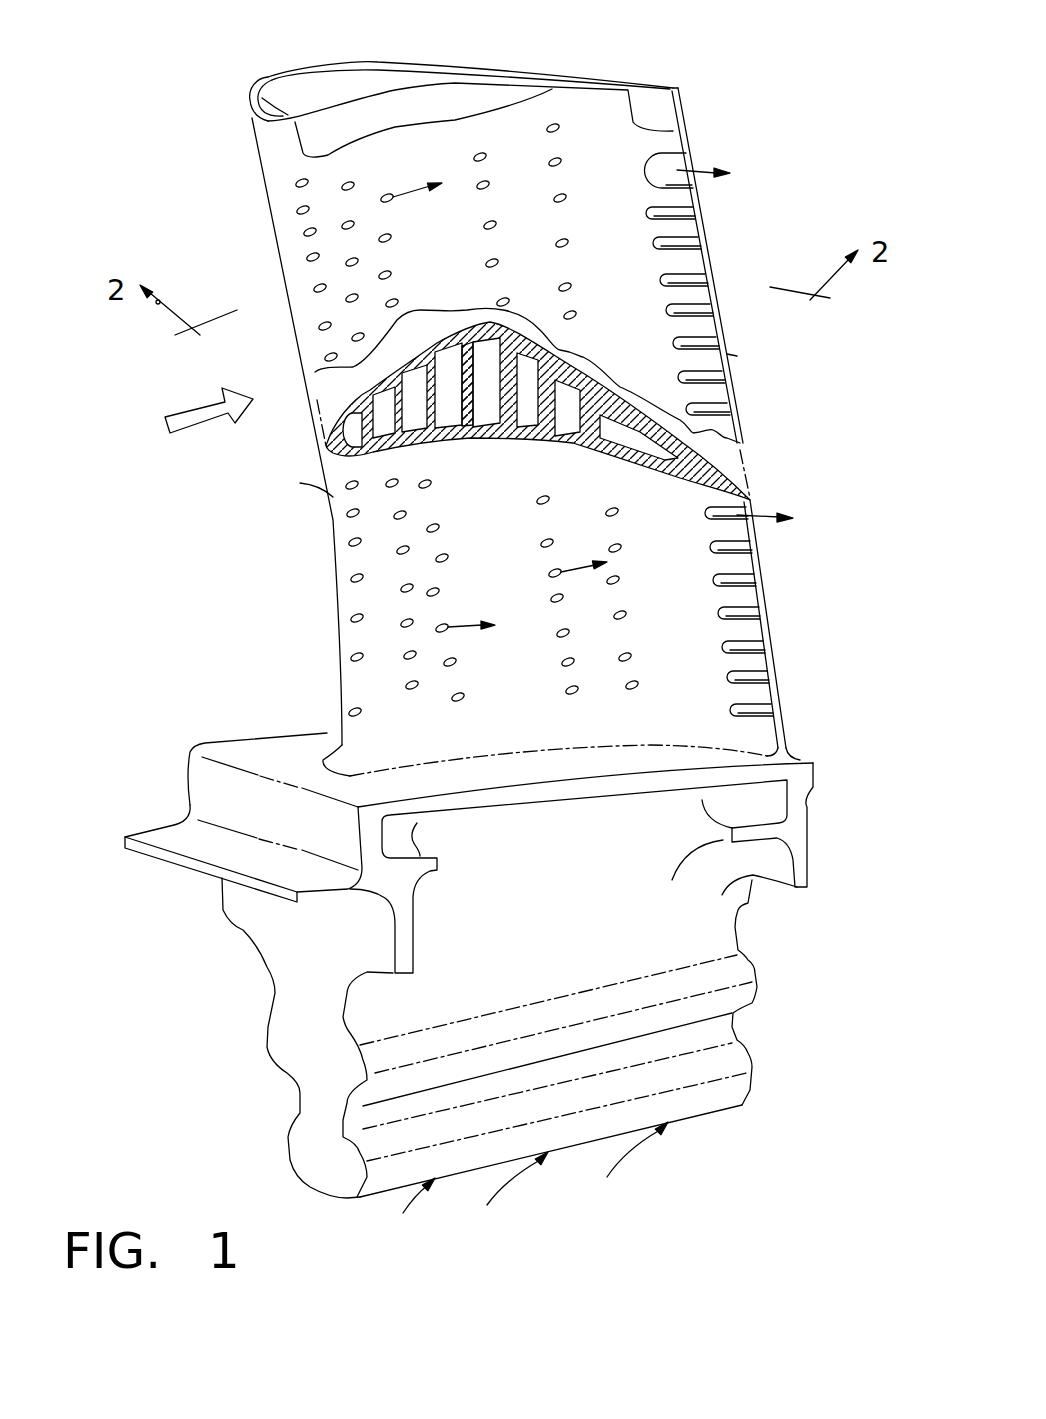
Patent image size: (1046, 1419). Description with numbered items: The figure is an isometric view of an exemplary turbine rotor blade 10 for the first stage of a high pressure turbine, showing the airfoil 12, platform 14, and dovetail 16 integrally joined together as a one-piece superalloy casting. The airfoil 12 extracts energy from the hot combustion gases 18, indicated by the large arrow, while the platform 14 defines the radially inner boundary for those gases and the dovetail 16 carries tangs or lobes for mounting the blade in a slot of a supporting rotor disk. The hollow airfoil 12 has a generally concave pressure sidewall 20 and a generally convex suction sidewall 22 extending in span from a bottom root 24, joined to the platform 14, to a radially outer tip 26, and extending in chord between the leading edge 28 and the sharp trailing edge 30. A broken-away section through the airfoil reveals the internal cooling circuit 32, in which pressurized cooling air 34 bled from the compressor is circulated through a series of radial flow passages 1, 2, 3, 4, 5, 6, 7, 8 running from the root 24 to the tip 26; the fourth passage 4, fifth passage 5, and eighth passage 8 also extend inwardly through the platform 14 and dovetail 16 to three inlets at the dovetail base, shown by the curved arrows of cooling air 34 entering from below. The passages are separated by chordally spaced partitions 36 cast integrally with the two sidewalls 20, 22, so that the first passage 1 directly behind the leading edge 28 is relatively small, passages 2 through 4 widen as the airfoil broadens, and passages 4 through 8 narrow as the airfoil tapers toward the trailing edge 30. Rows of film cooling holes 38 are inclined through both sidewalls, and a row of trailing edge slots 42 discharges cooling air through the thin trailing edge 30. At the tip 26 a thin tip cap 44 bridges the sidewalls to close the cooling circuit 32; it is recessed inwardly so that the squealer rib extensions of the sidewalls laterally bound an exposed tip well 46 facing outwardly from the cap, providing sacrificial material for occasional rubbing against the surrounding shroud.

The first passage 1 is at (358, 425).
The second passage 2 is at (385, 430).
The third passage 3 is at (417, 423).
The fourth passage 4 is at (448, 420).
The fifth passage 5 is at (483, 422).
The sixth passage 6 is at (527, 423).
The seventh passage 7 is at (563, 430).
The eighth passage 8 is at (620, 440).
The turbine rotor blade 10 is at (722, 70).
The airfoil 12 is at (240, 155).
The platform 14 is at (253, 735).
The dovetail 16 is at (268, 1020).
The combustion gases 18 is at (197, 405).
The pressure sidewall 20 is at (514, 576).
The suction sidewall 22 is at (363, 350).
The root 24 is at (502, 742).
The tip 26 is at (350, 63).
The leading edge 28 is at (297, 485).
The trailing edge 30 is at (727, 354).
The internal cooling circuit 32 is at (573, 382).
The cooling air 34 is at (567, 572).
The partition 36 is at (468, 345).
The film cooling holes 38 is at (348, 186).
The trailing edge slots 42 is at (687, 245).
The tip cap 44 is at (262, 98).
The tip well 46 is at (278, 90).